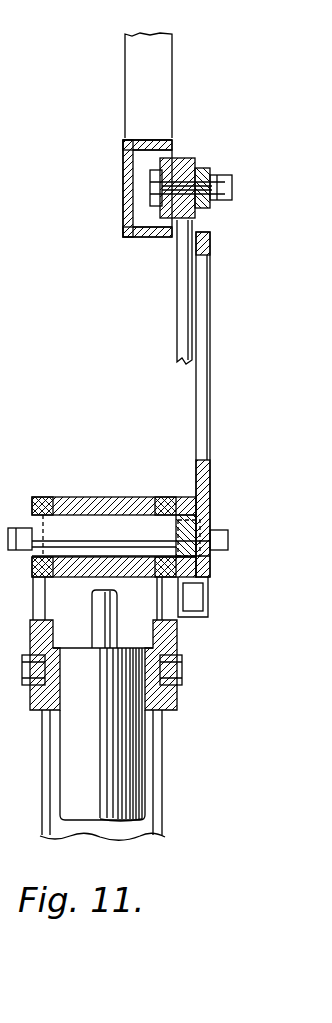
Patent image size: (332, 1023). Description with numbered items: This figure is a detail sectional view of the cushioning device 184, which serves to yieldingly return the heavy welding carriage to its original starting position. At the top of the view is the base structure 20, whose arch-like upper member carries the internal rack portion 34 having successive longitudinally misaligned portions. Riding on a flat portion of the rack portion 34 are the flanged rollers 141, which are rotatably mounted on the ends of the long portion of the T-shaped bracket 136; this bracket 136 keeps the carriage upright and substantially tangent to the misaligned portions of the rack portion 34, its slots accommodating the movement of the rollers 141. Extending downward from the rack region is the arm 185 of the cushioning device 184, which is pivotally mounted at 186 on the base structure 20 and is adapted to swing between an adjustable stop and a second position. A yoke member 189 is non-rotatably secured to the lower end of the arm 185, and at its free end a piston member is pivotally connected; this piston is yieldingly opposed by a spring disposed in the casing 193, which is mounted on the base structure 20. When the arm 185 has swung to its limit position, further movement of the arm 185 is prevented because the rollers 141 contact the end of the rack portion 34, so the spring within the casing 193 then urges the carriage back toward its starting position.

The base structure 20 is at (119, 126).
The internal rack portion 34 is at (140, 150).
The flanged rollers 141 is at (135, 166).
The T-shaped bracket 136 is at (177, 333).
The arm 185 is at (196, 420).
The pivotal mounting 186 is at (73, 515).
The yoke member 189 is at (37, 610).
The cushioning device 184 is at (163, 786).
The casing 193 is at (143, 736).